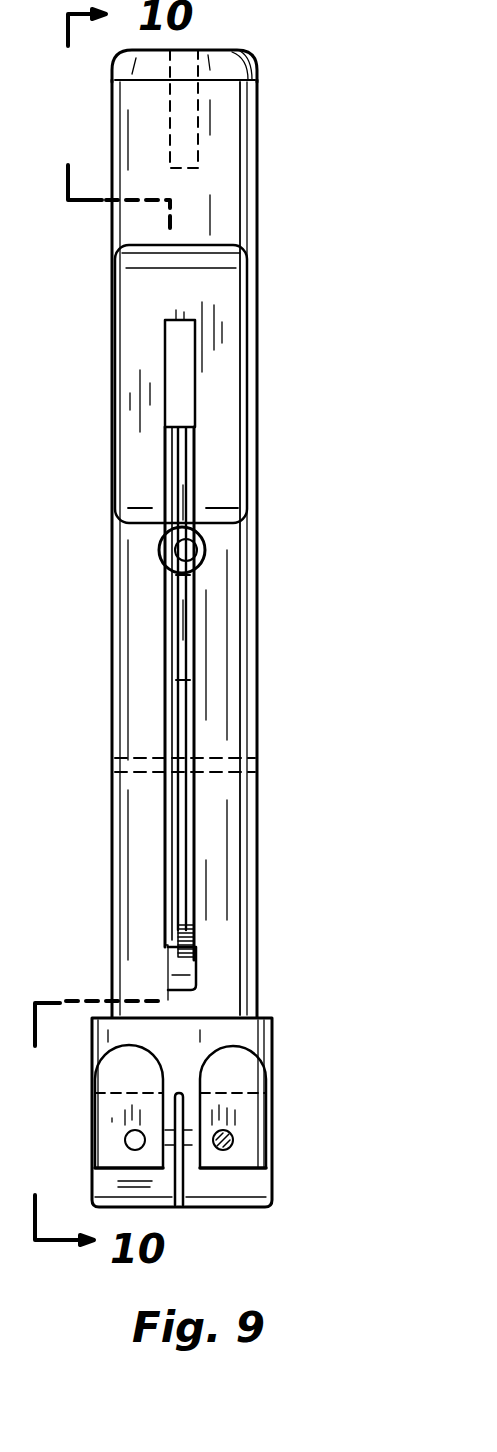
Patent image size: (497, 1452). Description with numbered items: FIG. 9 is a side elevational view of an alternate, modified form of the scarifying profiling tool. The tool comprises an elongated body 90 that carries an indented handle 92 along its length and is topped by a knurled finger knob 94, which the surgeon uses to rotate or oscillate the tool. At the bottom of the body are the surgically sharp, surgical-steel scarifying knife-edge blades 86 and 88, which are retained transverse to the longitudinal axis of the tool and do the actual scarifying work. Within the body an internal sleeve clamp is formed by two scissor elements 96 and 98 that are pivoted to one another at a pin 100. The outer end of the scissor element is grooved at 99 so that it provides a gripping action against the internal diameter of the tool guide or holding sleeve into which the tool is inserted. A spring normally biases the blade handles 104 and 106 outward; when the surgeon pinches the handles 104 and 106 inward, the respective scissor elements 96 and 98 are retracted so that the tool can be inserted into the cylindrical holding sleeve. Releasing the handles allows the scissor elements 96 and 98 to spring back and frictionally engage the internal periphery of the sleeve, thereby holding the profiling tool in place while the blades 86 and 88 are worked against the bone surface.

The scarifying knife-edge blade 86 is at (184, 1200).
The scarifying knife-edge blade 88 is at (98, 1186).
The body 90 is at (257, 651).
The indented handle 92 is at (230, 403).
The knurled finger knob 94 is at (244, 100).
The scissor element 96 is at (186, 874).
The scissor element 98 is at (170, 878).
The grooved outer end 99 is at (196, 954).
The pin 100 is at (255, 762).
The blade handle 104 is at (186, 455).
The blade handle 106 is at (172, 440).